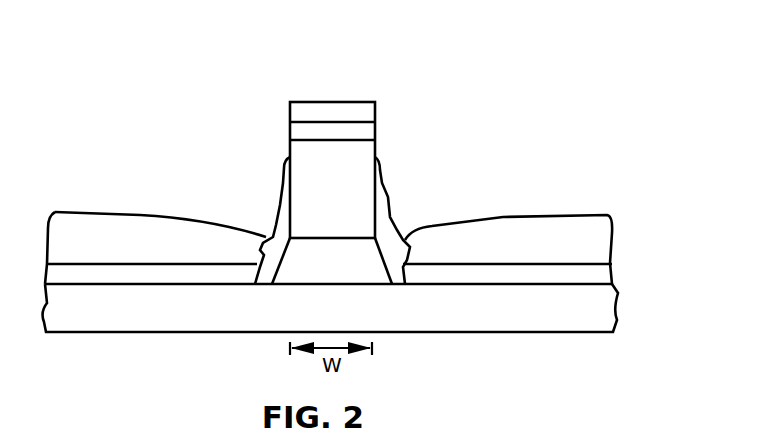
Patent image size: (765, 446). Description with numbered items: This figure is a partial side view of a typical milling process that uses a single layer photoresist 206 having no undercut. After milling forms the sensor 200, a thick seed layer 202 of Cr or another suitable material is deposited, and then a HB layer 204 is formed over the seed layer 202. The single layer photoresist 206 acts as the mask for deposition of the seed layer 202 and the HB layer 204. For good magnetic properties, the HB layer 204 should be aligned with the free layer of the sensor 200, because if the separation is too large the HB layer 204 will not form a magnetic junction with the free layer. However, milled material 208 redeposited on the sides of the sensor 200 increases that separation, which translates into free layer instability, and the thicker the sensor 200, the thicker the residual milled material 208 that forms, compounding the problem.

The sensor 200 is at (273, 227).
The seed layer 202 is at (375, 137).
The HB layer 204 is at (375, 106).
The single layer photoresist 206 is at (332, 101).
The milled material 208 is at (280, 198).